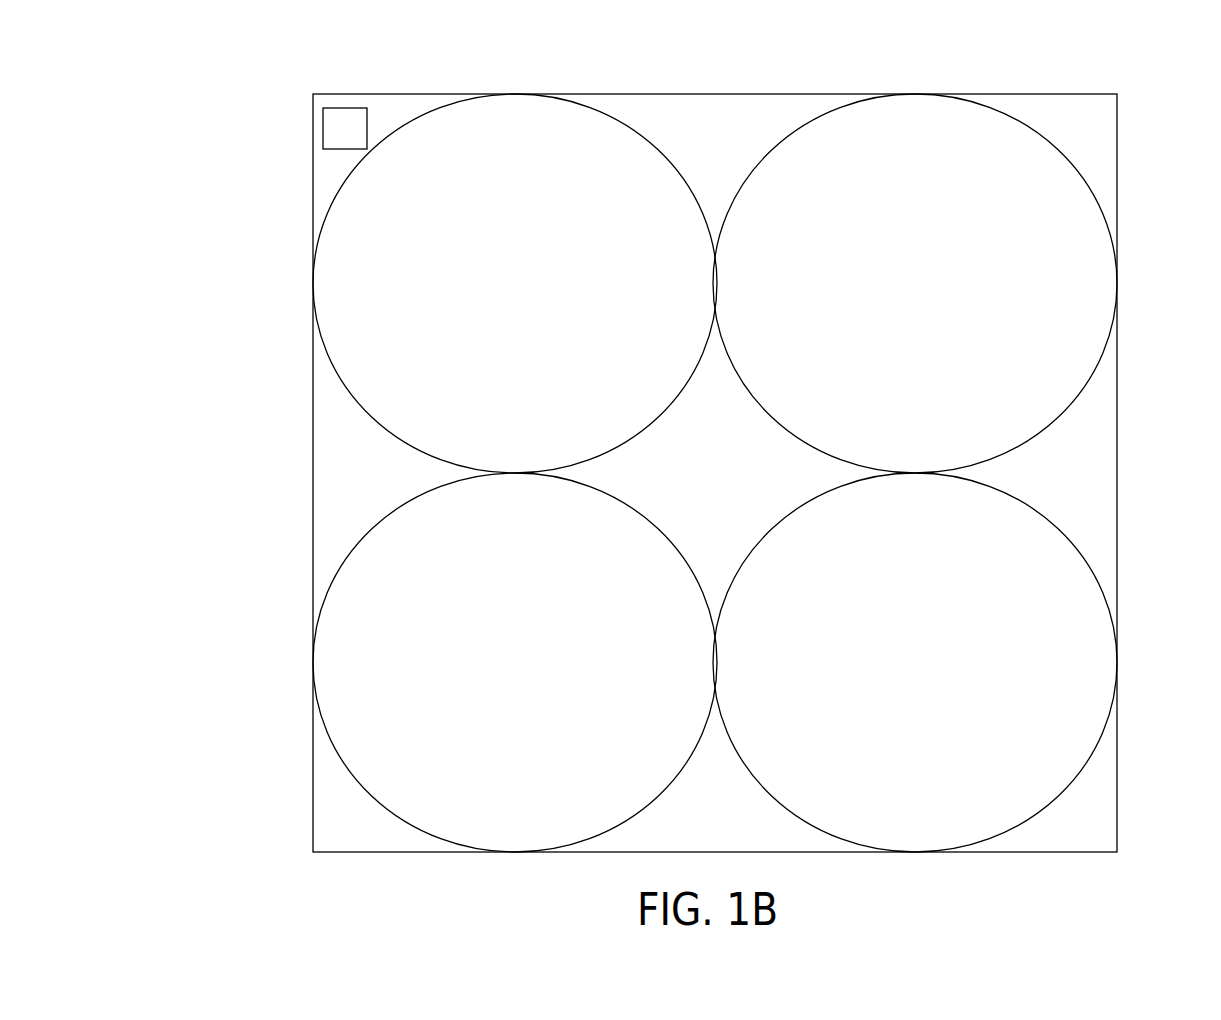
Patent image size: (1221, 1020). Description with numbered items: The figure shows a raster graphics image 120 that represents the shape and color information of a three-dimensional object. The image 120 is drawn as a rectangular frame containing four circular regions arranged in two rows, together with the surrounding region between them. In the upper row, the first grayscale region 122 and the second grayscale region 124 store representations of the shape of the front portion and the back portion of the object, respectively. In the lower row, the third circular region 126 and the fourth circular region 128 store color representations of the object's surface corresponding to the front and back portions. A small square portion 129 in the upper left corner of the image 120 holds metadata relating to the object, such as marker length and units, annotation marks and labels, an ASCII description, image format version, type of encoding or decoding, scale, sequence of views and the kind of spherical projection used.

The image 120 is at (321, 48).
The first grayscale region 122 is at (347, 393).
The second grayscale region 124 is at (1088, 190).
The third circular region 126 is at (347, 770).
The fourth circular region 128 is at (1088, 571).
The portion 129 is at (323, 130).